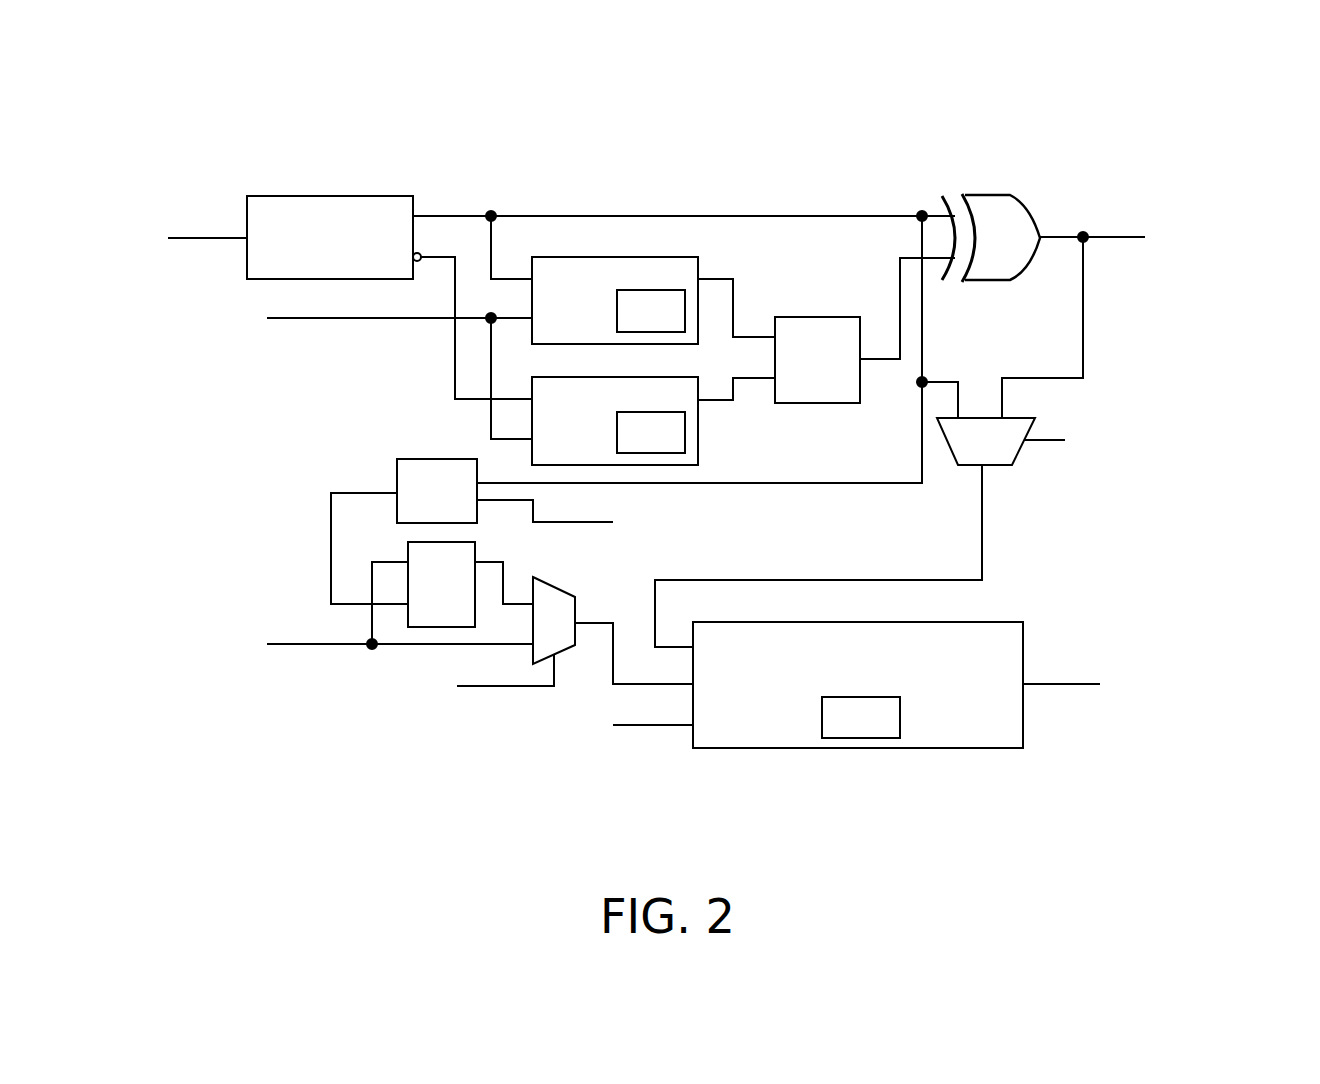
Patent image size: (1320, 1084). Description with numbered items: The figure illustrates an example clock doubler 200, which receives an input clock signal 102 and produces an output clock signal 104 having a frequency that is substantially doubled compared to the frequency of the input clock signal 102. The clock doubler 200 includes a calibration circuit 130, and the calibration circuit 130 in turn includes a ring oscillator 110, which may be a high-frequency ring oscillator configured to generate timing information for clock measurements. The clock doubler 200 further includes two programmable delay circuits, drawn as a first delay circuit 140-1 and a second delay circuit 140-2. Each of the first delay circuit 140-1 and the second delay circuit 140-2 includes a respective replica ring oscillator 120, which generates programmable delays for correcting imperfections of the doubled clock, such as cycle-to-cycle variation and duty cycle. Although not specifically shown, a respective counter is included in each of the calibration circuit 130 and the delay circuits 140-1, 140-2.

The clock doubler 200 is at (257, 102).
The input clock signal 102 is at (213, 238).
The output clock signal 104 is at (1122, 237).
The first delay circuit 140-1 is at (631, 257).
The second delay circuit 140-2 is at (631, 377).
The replica ring oscillator 120 is at (677, 327).
The calibration circuit 130 is at (882, 664).
The ring oscillator 110 is at (882, 732).